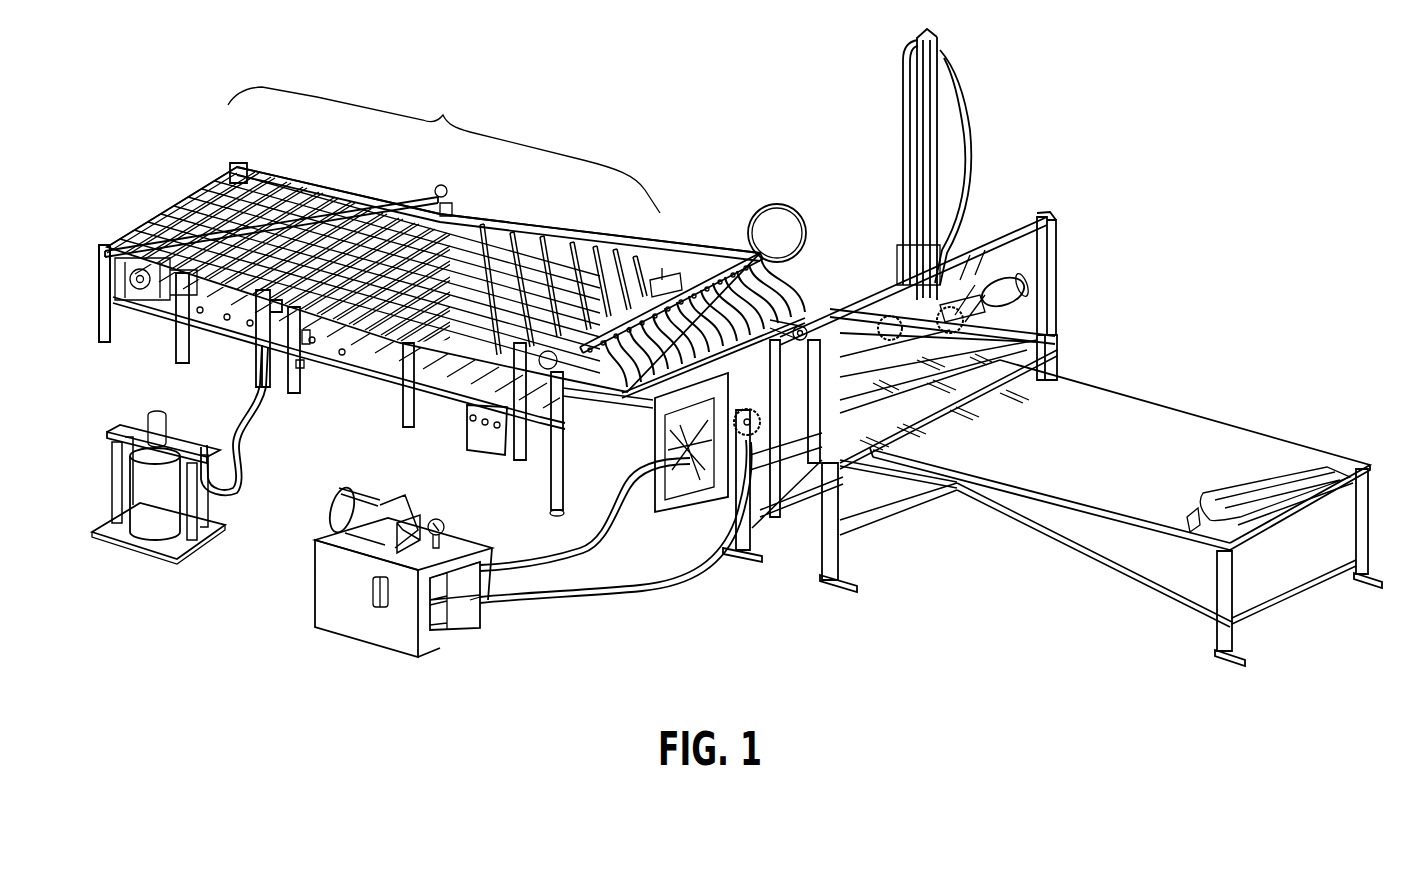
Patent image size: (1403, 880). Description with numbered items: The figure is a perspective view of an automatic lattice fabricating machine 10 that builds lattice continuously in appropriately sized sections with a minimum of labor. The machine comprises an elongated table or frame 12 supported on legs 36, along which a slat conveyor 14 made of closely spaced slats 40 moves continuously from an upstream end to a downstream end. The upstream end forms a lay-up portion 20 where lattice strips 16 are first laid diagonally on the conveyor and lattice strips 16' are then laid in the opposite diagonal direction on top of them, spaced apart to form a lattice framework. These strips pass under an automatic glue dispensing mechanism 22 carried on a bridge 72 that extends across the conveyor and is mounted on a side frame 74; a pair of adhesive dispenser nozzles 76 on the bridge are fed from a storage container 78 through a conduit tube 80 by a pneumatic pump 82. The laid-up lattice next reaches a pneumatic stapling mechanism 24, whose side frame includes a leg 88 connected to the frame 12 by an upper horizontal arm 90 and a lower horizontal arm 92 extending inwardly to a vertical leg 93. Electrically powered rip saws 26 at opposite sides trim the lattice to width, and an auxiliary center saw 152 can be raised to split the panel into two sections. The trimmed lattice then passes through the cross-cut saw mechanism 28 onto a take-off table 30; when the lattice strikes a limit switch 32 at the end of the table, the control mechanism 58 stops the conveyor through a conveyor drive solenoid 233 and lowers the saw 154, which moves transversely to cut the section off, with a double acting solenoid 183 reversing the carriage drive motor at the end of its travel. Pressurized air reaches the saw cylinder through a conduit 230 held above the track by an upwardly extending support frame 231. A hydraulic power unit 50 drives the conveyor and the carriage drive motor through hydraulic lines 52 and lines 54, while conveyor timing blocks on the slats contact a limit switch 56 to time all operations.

The lattice fabricating machine 10 is at (632, 156).
The frame 12 is at (341, 180).
The slat conveyor 14 is at (201, 190).
The lattice strips 16 is at (133, 236).
The lattice strips 16' is at (563, 264).
The lay-up portion 20 is at (444, 150).
The automatic glue dispensing mechanism 22 is at (441, 181).
The pneumatic stapling mechanism 24 is at (730, 230).
The rip saws 26 is at (877, 277).
The cross-cut saw mechanism 28 is at (1048, 209).
The table 30 is at (1187, 413).
The limit switch 32 is at (1190, 523).
The supporting legs 36 is at (103, 325).
The slats 40 is at (183, 226).
The hydraulic power unit 50 is at (360, 630).
The hydraulic lines 52 is at (240, 193).
The hydraulic lines 54 is at (343, 355).
The limit switch 56 is at (313, 345).
The control mechanism 58 is at (487, 444).
The bridge 72 is at (410, 203).
The side frame 74 is at (267, 330).
The adhesive dispenser nozzles 76 is at (448, 212).
The storage container 78 is at (140, 517).
The conduit tube 80 is at (233, 441).
The pneumatic pump 82 is at (167, 423).
The leg 88 is at (562, 487).
The upper horizontal arm 90 is at (568, 405).
The lower horizontal arm 92 is at (578, 445).
The vertical leg 93 is at (605, 392).
The auxiliary center saw 152 is at (824, 365).
The saw 154 is at (957, 307).
The double acting solenoid 183 is at (457, 621).
The conduit 230 is at (963, 138).
The support frame 231 is at (933, 87).
The conveyor drive solenoid 233 is at (463, 581).